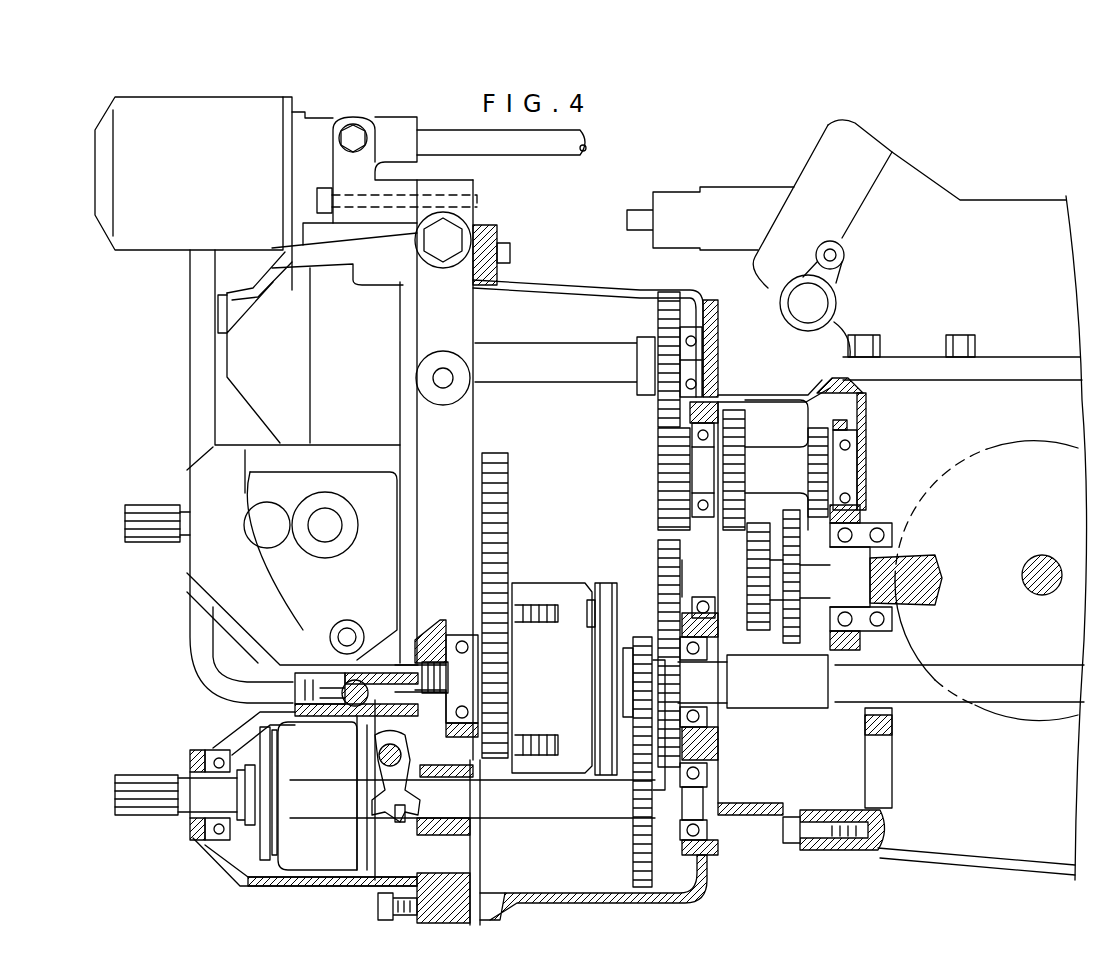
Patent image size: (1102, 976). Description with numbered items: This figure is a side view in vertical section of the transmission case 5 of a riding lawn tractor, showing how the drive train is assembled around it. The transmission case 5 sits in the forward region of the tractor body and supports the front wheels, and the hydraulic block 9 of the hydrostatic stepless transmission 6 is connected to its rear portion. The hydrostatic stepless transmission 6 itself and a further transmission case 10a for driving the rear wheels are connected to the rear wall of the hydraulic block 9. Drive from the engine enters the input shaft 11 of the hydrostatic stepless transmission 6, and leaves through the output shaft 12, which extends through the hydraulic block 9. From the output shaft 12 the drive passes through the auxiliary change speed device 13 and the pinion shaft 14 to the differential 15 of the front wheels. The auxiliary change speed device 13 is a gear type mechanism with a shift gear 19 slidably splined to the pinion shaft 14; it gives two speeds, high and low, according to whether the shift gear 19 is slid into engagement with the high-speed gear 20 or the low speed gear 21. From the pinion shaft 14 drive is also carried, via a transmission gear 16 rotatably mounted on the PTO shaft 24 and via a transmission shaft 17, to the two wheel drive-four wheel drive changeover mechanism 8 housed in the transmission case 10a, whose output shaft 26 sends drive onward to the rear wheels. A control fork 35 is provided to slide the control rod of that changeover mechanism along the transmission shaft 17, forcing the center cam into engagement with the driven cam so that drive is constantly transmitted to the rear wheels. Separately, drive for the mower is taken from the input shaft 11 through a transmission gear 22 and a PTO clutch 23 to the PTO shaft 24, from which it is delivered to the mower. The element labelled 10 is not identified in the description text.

The transmission case 5 is at (553, 280).
The hydrostatic stepless transmission 6 is at (232, 417).
The two wheel drive-four wheel drive changeover mechanism 8 is at (285, 878).
The hydraulic block 9 is at (465, 428).
The housing 10 is at (218, 737).
The transmission case 10a is at (338, 890).
The input shaft 11 is at (145, 505).
The output shaft 12 is at (553, 343).
The auxiliary change speed device 13 is at (772, 640).
The pinion shaft 14 is at (852, 575).
The differential 15 is at (985, 440).
The transmission gear 16 is at (653, 637).
The transmission shaft 17 is at (550, 812).
The shift gear 19 is at (779, 577).
The high-speed gear 20 is at (735, 425).
The low speed gear 21 is at (822, 440).
The transmission gear 22 is at (483, 617).
The PTO clutch 23 is at (558, 583).
The PTO shaft 24 is at (932, 700).
The output shaft 26 is at (143, 785).
The control fork 35 is at (390, 800).